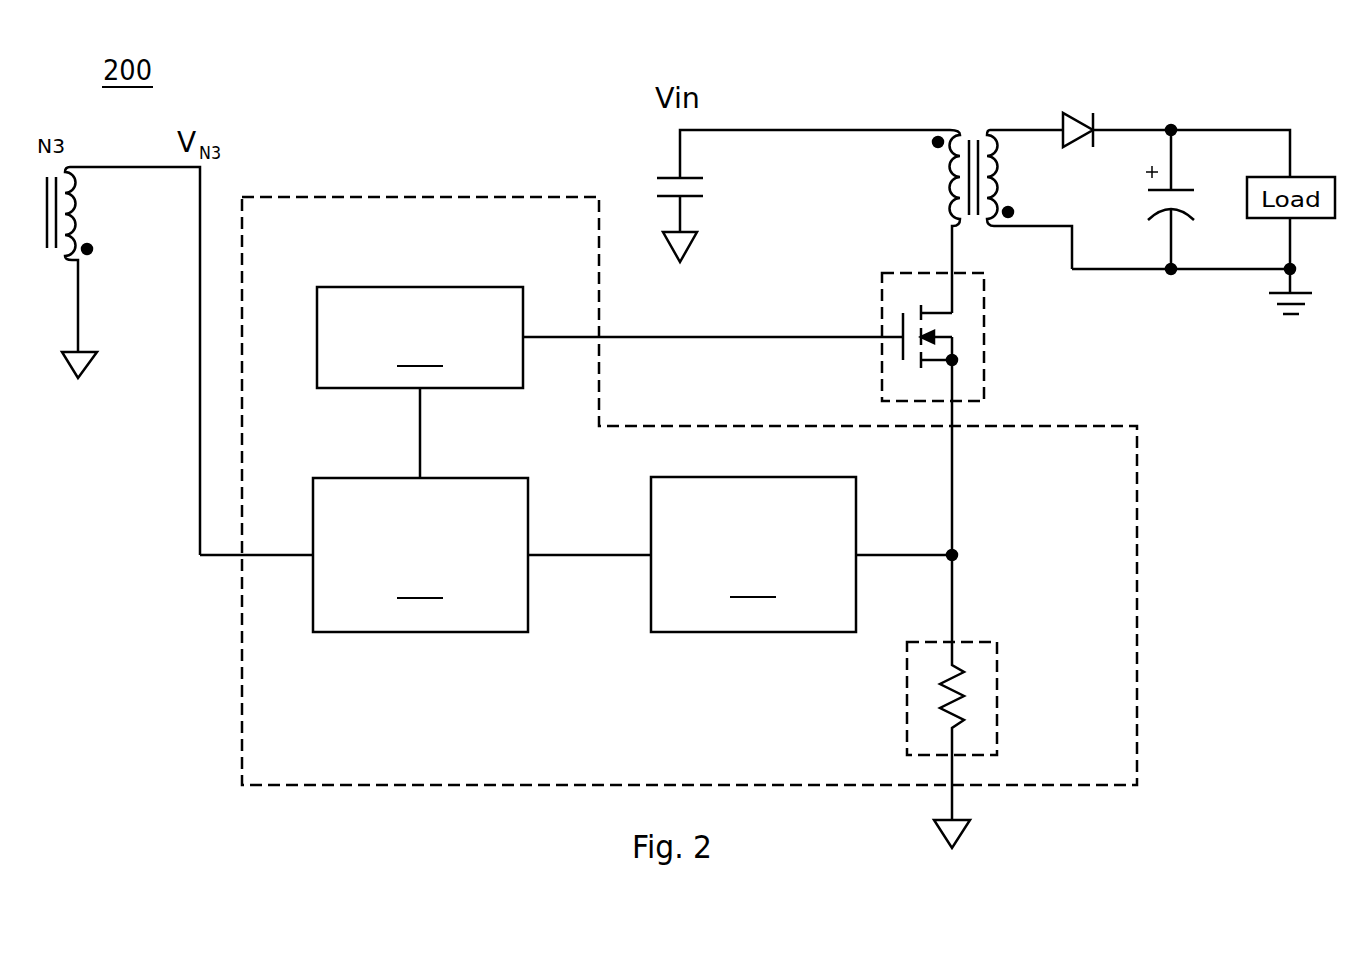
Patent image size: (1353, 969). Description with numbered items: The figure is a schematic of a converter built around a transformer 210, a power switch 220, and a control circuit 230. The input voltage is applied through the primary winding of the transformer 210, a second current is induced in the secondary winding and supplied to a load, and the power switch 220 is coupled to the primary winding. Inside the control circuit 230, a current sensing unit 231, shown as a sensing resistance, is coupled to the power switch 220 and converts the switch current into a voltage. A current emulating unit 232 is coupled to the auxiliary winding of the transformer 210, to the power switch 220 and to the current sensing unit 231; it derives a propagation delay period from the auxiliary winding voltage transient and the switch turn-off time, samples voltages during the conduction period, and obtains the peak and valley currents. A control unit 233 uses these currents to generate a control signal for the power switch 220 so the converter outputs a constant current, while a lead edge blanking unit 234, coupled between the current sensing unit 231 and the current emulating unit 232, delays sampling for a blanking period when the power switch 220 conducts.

The transformer 210 is at (972, 137).
The power switch 220 is at (984, 337).
The control circuit 230 is at (1137, 618).
The current sensing unit 231 is at (997, 690).
The current emulating unit 232 is at (482, 555).
The control unit 233 is at (420, 382).
The lead edge blanking unit 234 is at (804, 554).